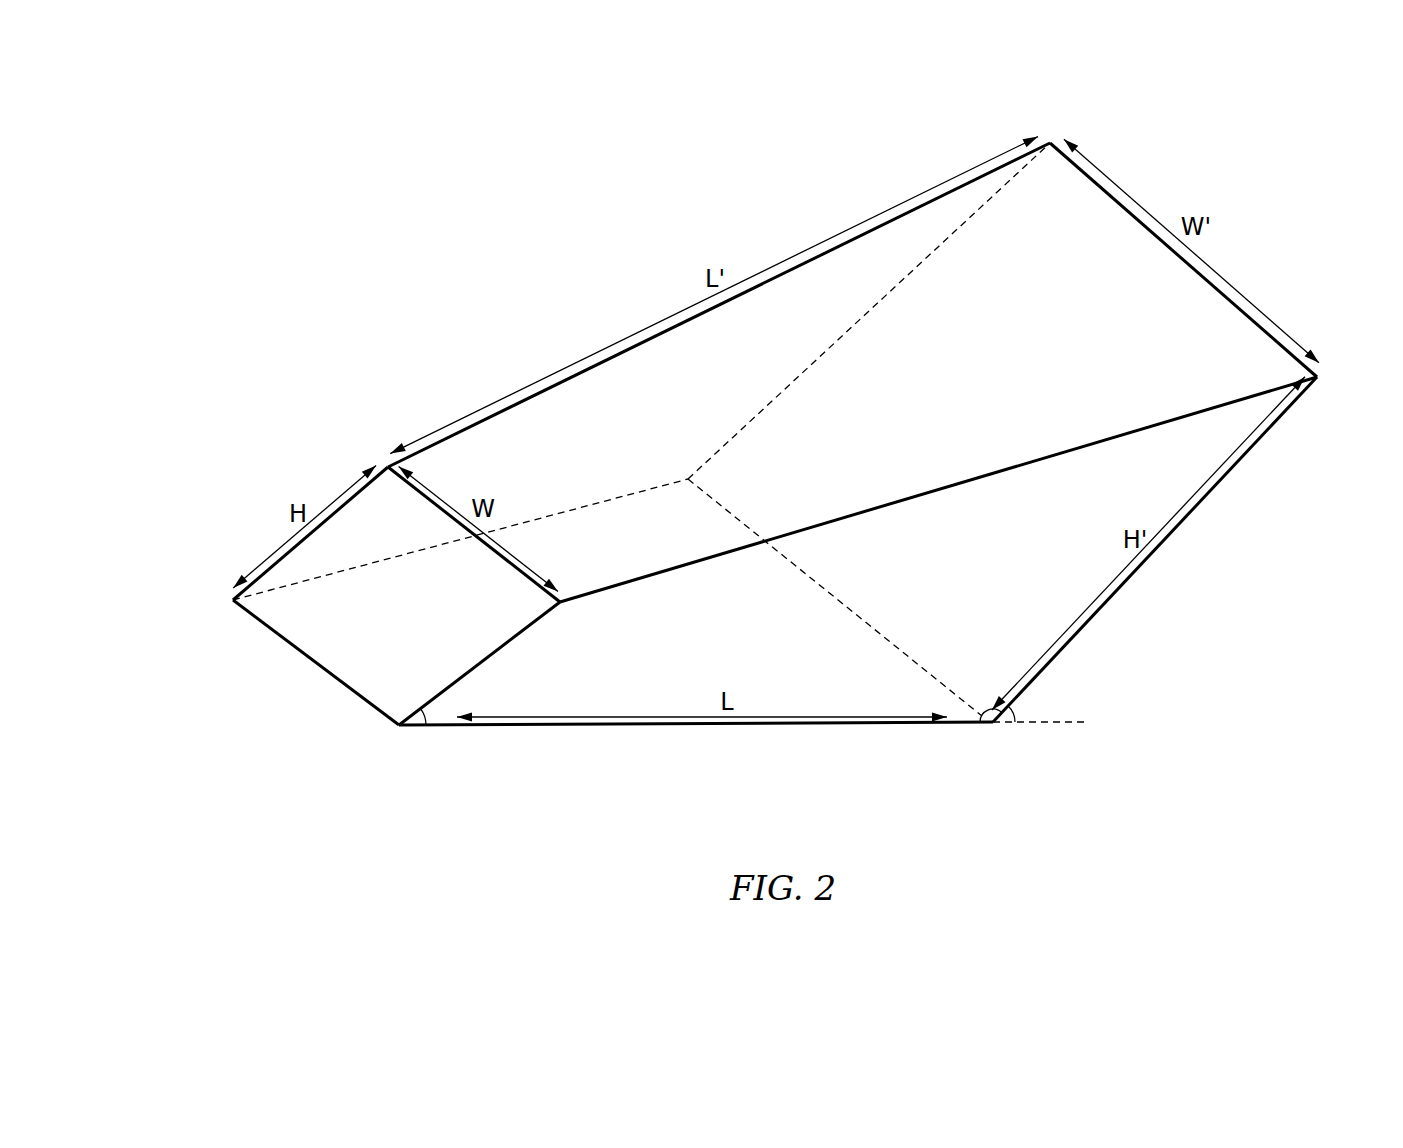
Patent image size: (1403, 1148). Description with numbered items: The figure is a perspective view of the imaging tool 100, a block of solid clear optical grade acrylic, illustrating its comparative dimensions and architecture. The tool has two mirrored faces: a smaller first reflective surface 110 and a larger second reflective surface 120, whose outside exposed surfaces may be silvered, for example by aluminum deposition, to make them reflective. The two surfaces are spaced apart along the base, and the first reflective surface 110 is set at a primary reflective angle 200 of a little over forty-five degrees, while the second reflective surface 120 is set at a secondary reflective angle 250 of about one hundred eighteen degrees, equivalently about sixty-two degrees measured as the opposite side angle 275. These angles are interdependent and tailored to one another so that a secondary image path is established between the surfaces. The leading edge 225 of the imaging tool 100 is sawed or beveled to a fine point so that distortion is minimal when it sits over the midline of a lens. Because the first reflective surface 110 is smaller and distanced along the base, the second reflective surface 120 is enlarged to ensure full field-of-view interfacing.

The imaging tool 100 is at (486, 241).
The first reflective surface 110 is at (407, 649).
The second reflective surface 120 is at (1128, 578).
The primary reflective angle 200 is at (423, 727).
The leading edge 225 is at (316, 664).
The secondary reflective angle 250 is at (989, 730).
The opposite side angle 275 is at (1009, 730).